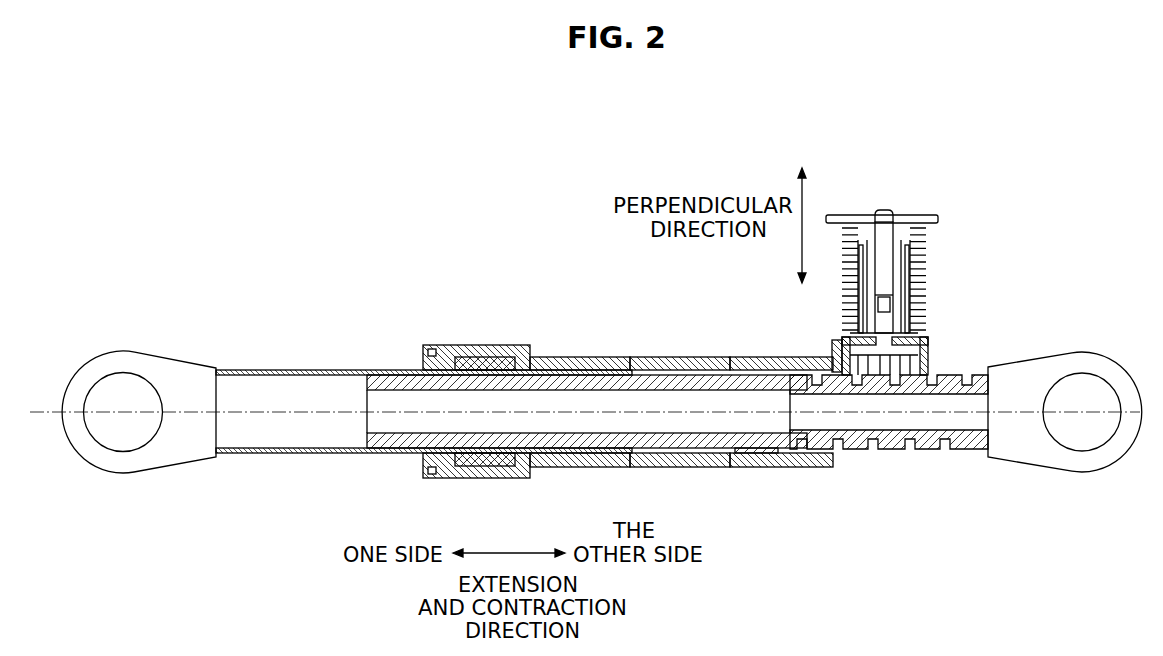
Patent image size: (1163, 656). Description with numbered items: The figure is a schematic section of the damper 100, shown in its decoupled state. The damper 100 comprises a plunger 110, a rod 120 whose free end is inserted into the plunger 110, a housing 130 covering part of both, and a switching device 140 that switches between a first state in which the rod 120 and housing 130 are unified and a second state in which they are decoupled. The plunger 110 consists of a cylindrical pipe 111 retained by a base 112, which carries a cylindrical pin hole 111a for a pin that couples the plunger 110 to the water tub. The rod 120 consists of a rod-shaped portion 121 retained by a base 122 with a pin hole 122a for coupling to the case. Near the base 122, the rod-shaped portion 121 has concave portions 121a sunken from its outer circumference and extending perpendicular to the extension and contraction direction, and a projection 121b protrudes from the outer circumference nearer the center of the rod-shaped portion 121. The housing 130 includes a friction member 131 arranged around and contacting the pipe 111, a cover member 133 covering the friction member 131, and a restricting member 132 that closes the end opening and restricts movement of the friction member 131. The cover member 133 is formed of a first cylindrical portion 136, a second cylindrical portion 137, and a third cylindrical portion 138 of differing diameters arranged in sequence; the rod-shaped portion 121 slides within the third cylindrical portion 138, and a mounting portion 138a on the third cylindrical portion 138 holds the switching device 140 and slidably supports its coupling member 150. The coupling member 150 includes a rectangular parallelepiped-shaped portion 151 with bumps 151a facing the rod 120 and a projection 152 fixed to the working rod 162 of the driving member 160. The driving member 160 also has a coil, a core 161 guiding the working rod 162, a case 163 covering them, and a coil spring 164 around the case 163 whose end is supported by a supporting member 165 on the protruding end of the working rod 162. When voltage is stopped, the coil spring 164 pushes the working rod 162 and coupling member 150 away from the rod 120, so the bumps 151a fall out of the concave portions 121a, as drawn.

The damper 100 is at (236, 148).
The plunger 110 is at (347, 368).
The pipe 111 is at (273, 370).
The pin hole 111a is at (122, 374).
The base 112 is at (200, 360).
The rod 120 is at (754, 483).
The rod-shaped portion 121 is at (677, 475).
The concave portion 121a is at (890, 447).
The projection 121b is at (783, 452).
The base 122 is at (1042, 463).
The pin hole 122a is at (1083, 451).
The housing 130 is at (629, 353).
The friction member 131 is at (495, 345).
The restricting member 132 is at (443, 345).
The cover member 133 is at (679, 364).
The first cylindrical portion 136 is at (524, 357).
The second cylindrical portion 137 is at (660, 357).
The third cylindrical portion 138 is at (835, 347).
The mounting portion 138a is at (835, 365).
The switching device 140 is at (949, 221).
The coupling member 150 is at (957, 307).
The rectangular parallelepiped-shaped portion 151 is at (908, 325).
The bump 151a is at (930, 360).
The projection 152 is at (893, 303).
The driving member 160 is at (921, 237).
The core 161 is at (912, 272).
The working rod 162 is at (917, 235).
The case 163 is at (918, 250).
The coil spring 164 is at (914, 226).
The supporting member 165 is at (847, 215).